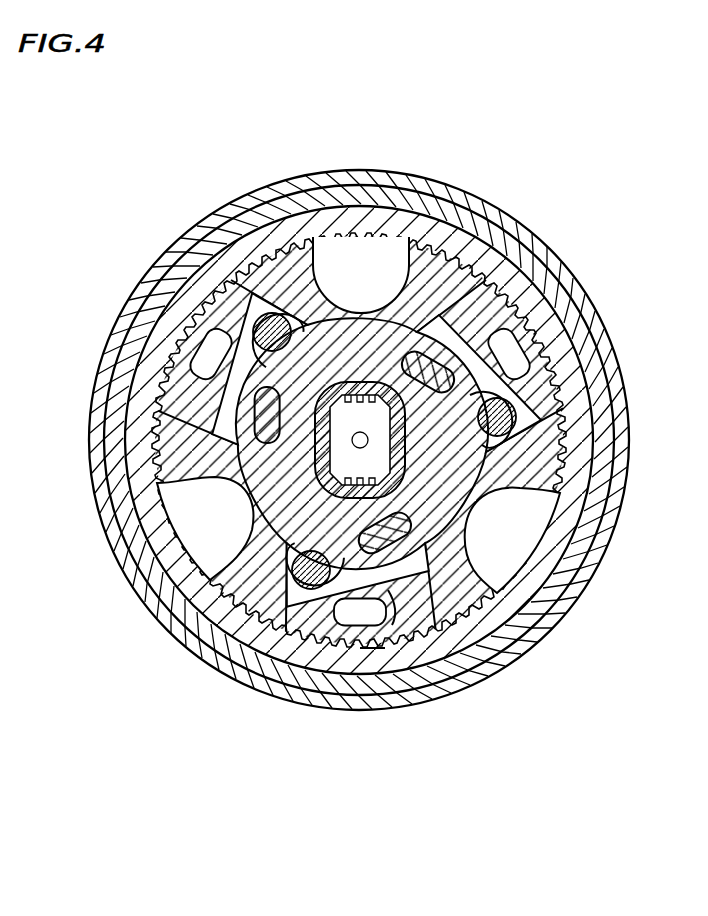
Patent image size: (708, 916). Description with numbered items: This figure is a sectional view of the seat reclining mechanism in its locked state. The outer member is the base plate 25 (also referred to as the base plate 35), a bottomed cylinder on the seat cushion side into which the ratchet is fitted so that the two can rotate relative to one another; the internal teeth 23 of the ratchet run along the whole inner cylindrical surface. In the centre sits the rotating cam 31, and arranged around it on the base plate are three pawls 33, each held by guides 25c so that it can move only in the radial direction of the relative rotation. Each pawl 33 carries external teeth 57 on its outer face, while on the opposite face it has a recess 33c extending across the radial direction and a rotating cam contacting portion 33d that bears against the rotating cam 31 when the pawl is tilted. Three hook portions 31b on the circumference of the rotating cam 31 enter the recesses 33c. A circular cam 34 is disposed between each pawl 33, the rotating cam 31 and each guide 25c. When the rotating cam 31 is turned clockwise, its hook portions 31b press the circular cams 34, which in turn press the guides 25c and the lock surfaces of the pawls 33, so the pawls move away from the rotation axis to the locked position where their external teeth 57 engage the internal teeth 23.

The internal teeth 23 is at (160, 582).
The base plate 25 is at (606, 432).
The guides 25c is at (450, 283).
The rotating cam 31 is at (340, 350).
The hook portions 31b is at (522, 345).
The pawls 33 is at (175, 330).
The recess 33c is at (458, 350).
The rotating cam contacting portion 33d is at (405, 335).
The circular cam 34 is at (270, 320).
The base plate 35 is at (400, 605).
The external teeth 57 is at (372, 650).